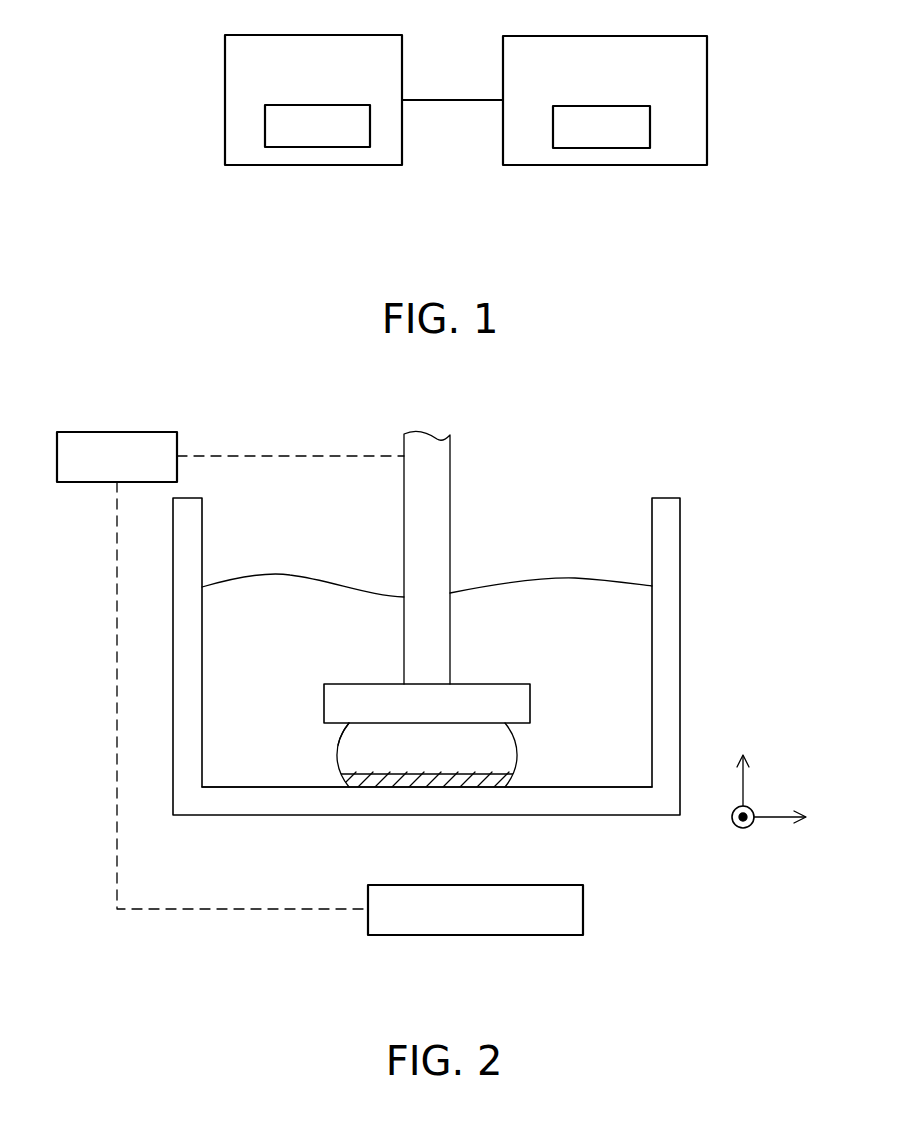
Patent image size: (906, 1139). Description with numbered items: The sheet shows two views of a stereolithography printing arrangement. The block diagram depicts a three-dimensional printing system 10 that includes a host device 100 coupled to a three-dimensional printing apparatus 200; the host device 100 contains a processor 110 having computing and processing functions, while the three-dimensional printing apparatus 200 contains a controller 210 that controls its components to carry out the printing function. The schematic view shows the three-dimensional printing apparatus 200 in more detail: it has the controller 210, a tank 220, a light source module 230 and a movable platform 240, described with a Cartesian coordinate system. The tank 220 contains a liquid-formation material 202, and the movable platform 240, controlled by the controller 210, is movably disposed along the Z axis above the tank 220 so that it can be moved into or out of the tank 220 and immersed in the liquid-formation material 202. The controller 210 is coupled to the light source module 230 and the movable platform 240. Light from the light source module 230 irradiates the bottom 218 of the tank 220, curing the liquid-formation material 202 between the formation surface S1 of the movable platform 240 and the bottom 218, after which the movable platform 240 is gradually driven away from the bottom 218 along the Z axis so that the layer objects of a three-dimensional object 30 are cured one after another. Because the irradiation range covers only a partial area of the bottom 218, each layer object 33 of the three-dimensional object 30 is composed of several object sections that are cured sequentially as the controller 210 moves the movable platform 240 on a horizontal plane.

In FIG. 1, the three-dimensional printing system 10 is at (464, 154).
In FIG. 1, the host device 100 is at (223, 98).
In FIG. 1, the processor 110 is at (318, 148).
In FIG. 1, the three-dimensional printing apparatus 200 is at (709, 98).
In FIG. 2, the three-dimensional printing apparatus 200 is at (657, 947).
In FIG. 1, the controller 210 is at (600, 149).
In FIG. 2, the controller 210 is at (143, 431).
In FIG. 2, the liquid-formation material 202 is at (243, 595).
In FIG. 2, the bottom of the tank 218 is at (259, 790).
In FIG. 2, the tank 220 is at (654, 521).
In FIG. 2, the light source module 230 is at (458, 936).
In FIG. 2, the movable platform 240 is at (402, 529).
In FIG. 2, the three-dimensional object 30 is at (427, 790).
In FIG. 2, the layer object 33 is at (381, 778).
In FIG. 2, the formation surface S1 is at (326, 739).